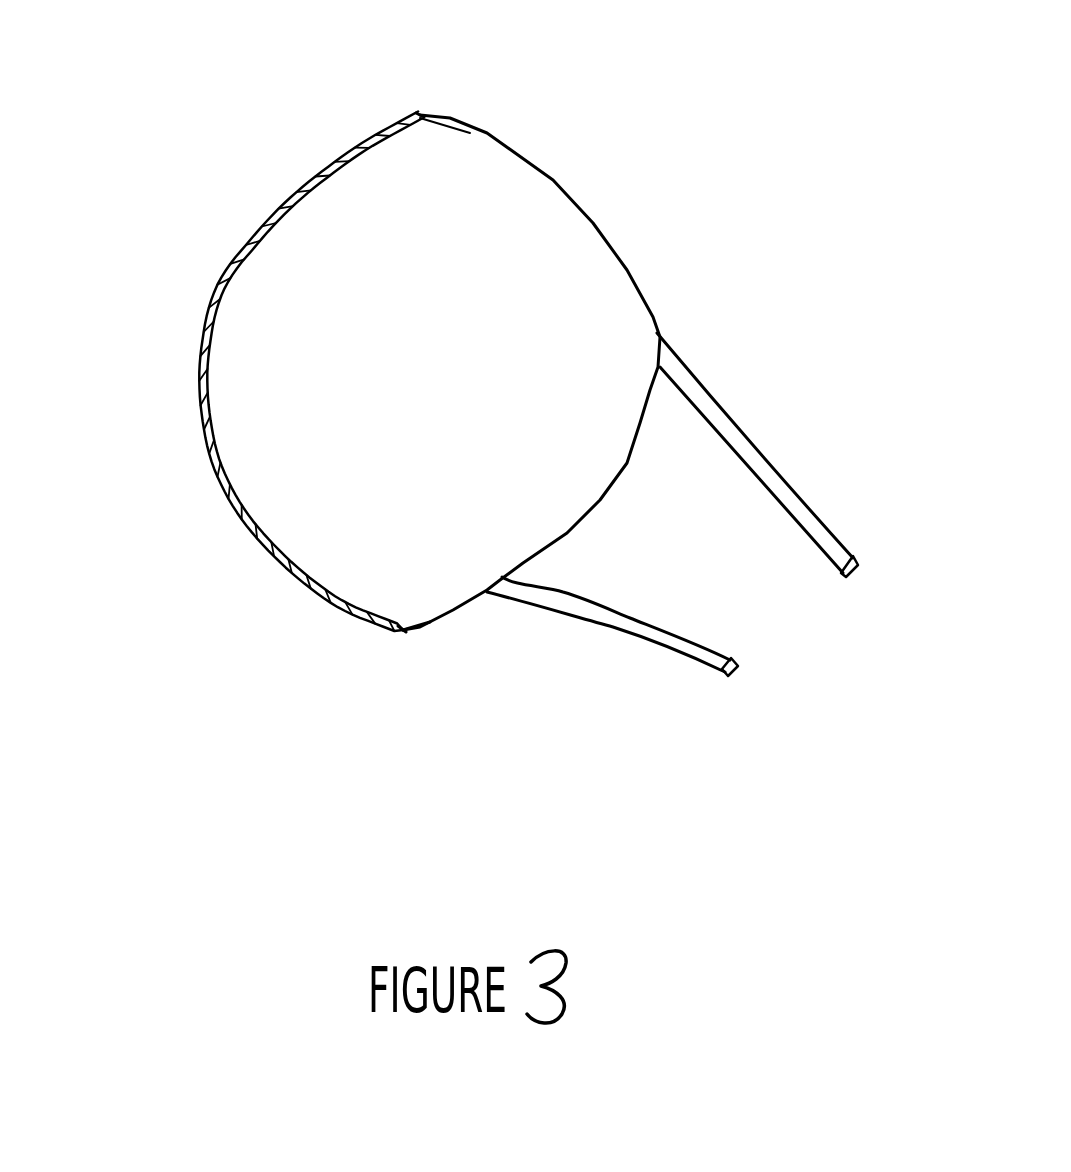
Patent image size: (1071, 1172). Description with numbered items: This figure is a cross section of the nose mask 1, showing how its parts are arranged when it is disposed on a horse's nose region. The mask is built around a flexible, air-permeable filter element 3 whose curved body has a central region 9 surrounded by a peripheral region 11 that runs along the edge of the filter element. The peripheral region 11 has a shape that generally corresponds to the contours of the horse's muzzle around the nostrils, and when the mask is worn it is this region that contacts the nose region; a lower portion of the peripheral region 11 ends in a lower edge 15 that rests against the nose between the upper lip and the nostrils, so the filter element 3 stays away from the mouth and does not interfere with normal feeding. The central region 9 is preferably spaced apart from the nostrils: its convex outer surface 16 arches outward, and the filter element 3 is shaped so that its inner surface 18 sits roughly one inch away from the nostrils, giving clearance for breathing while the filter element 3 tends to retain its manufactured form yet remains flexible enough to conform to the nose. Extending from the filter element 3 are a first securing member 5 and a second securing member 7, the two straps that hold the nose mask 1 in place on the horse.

The nose mask 1 is at (753, 127).
The filter element 3 is at (272, 369).
The first securing member 5 is at (670, 648).
The second securing member 7 is at (790, 493).
The central region 9 is at (252, 372).
The peripheral region 11 is at (378, 120).
The lower edge 15 is at (413, 633).
The convex outer surface 16 is at (217, 473).
The inner surface 18 is at (248, 476).